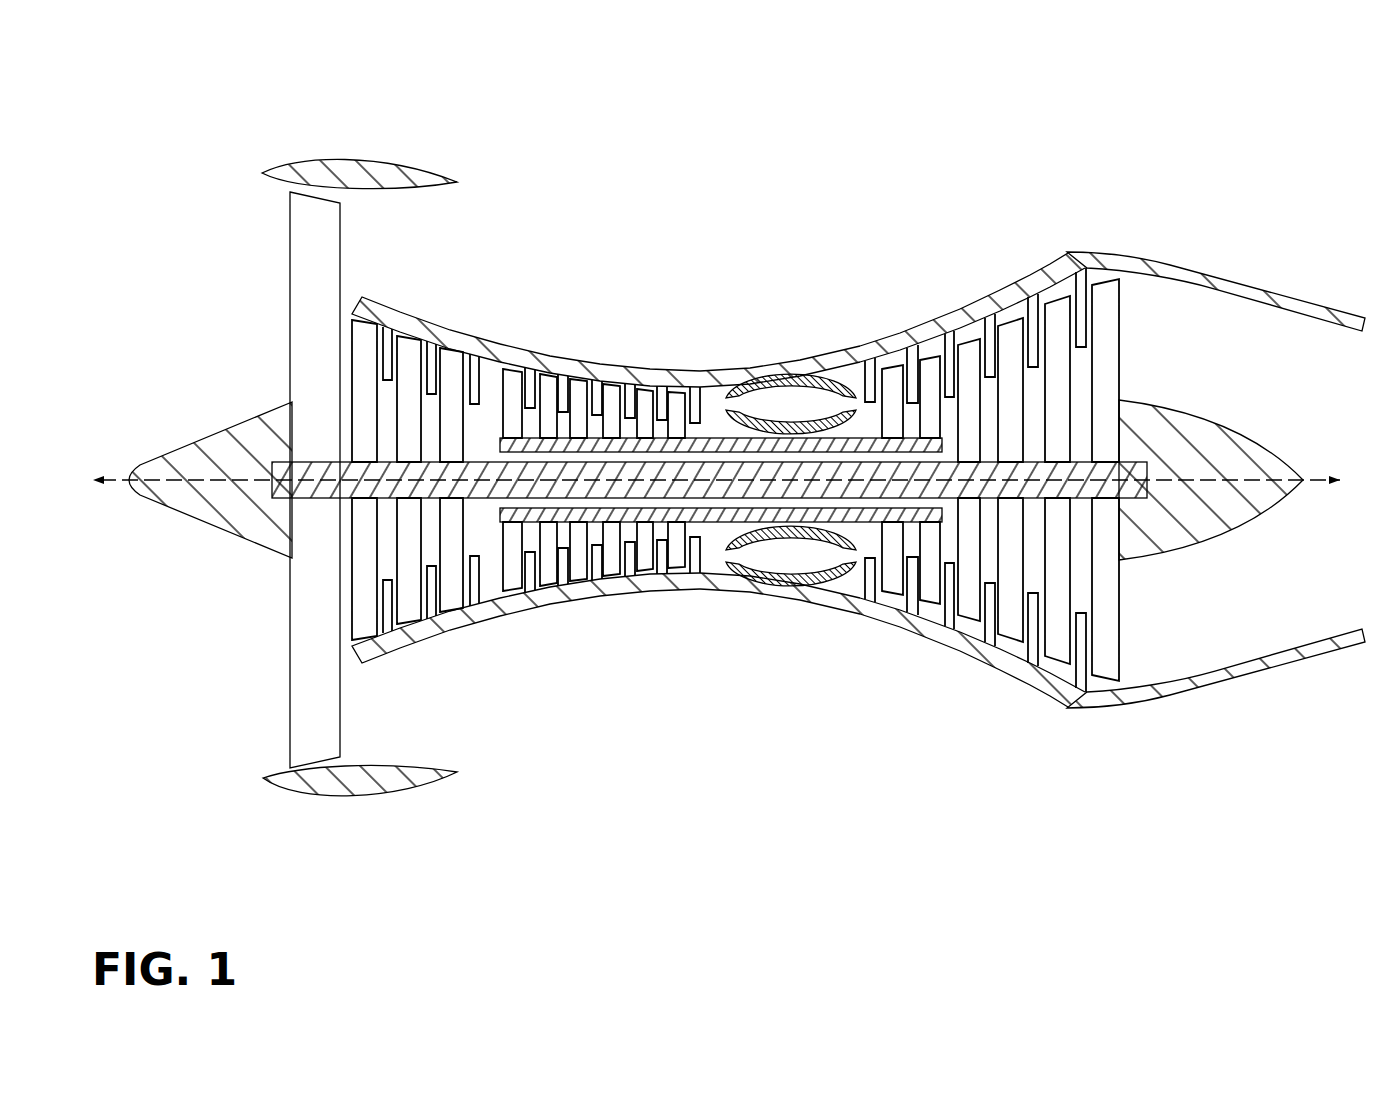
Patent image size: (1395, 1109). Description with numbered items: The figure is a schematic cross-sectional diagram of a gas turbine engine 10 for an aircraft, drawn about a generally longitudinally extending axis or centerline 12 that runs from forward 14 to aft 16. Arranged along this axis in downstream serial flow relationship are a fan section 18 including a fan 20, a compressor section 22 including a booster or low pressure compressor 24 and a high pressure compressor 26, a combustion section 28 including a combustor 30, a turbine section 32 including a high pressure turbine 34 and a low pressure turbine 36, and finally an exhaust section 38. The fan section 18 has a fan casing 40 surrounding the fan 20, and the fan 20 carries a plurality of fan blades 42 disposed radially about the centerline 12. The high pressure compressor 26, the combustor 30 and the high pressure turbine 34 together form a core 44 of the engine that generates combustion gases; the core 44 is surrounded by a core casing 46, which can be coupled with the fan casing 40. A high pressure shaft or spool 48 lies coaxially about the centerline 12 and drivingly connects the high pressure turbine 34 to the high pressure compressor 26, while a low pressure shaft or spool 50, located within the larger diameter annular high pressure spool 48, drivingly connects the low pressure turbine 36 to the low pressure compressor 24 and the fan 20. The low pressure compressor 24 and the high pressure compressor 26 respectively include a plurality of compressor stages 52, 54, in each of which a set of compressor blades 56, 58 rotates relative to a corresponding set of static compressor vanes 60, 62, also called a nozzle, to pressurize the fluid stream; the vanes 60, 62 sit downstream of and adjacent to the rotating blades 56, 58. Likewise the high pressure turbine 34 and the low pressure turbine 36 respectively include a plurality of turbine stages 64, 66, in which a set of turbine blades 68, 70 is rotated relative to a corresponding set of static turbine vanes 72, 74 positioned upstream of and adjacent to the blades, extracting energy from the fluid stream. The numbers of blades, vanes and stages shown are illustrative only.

The gas turbine engine 10 is at (146, 89).
The centerline 12 is at (185, 478).
The forward 14 is at (80, 480).
The aft 16 is at (1353, 480).
The fan section 18 is at (343, 843).
The fan 20 is at (283, 257).
The compressor section 22 is at (346, 843).
The low pressure compressor 24 is at (488, 638).
The high pressure compressor 26 is at (655, 606).
The combustion section 28 is at (880, 843).
The combustor 30 is at (852, 372).
The turbine section 32 is at (1115, 843).
The high pressure turbine 34 is at (866, 630).
The low pressure turbine 36 is at (1000, 678).
The exhaust section 38 is at (1378, 843).
The fan casing 40 is at (358, 160).
The fan blades 42 is at (302, 705).
The core 44 is at (943, 698).
The core casing 46 is at (769, 366).
The high pressure spool 48 is at (722, 438).
The low pressure spool 50 is at (484, 465).
The compressor stages of the LP compressor 52 is at (350, 285).
The compressor stages of the HP compressor 54 is at (512, 335).
The compressor blades of the LP compressor 56 is at (367, 326).
The compressor blades of the HP compressor 58 is at (513, 371).
The static compressor vanes of the LP compressor 60 is at (388, 340).
The static compressor vanes of the HP compressor 62 is at (534, 376).
The turbine stages of the HP turbine 64 is at (898, 324).
The turbine stages of the LP turbine 66 is at (1030, 264).
The turbine blades of the HP turbine 68 is at (912, 370).
The turbine blades of the LP turbine 70 is at (1058, 322).
The static turbine vanes of the HP turbine 72 is at (903, 345).
The static turbine vanes of the LP turbine 74 is at (1042, 300).